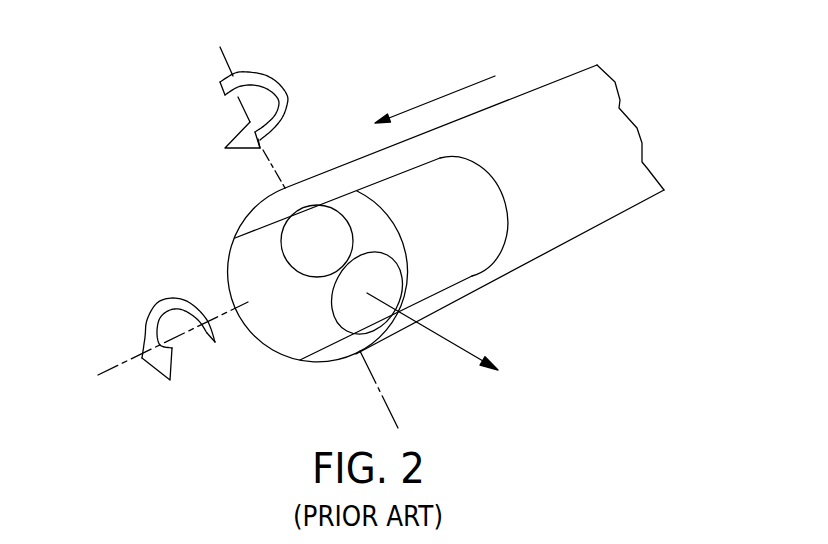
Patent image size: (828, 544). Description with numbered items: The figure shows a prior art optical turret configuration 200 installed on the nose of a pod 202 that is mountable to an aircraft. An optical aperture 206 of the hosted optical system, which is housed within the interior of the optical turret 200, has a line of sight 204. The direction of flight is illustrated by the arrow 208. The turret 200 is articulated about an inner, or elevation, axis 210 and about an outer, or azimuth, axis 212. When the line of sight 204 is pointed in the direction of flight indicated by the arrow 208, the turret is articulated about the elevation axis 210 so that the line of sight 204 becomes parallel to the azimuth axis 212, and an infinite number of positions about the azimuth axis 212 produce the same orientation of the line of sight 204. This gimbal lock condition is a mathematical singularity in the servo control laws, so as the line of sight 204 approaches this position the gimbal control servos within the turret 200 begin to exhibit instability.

The optical turret configuration 200 is at (242, 362).
The pod 202 is at (613, 220).
The line of sight 204 is at (460, 343).
The optical aperture 206 is at (370, 313).
The arrow 208 is at (440, 95).
The elevation axis 210 is at (228, 62).
The azimuth axis 212 is at (110, 370).